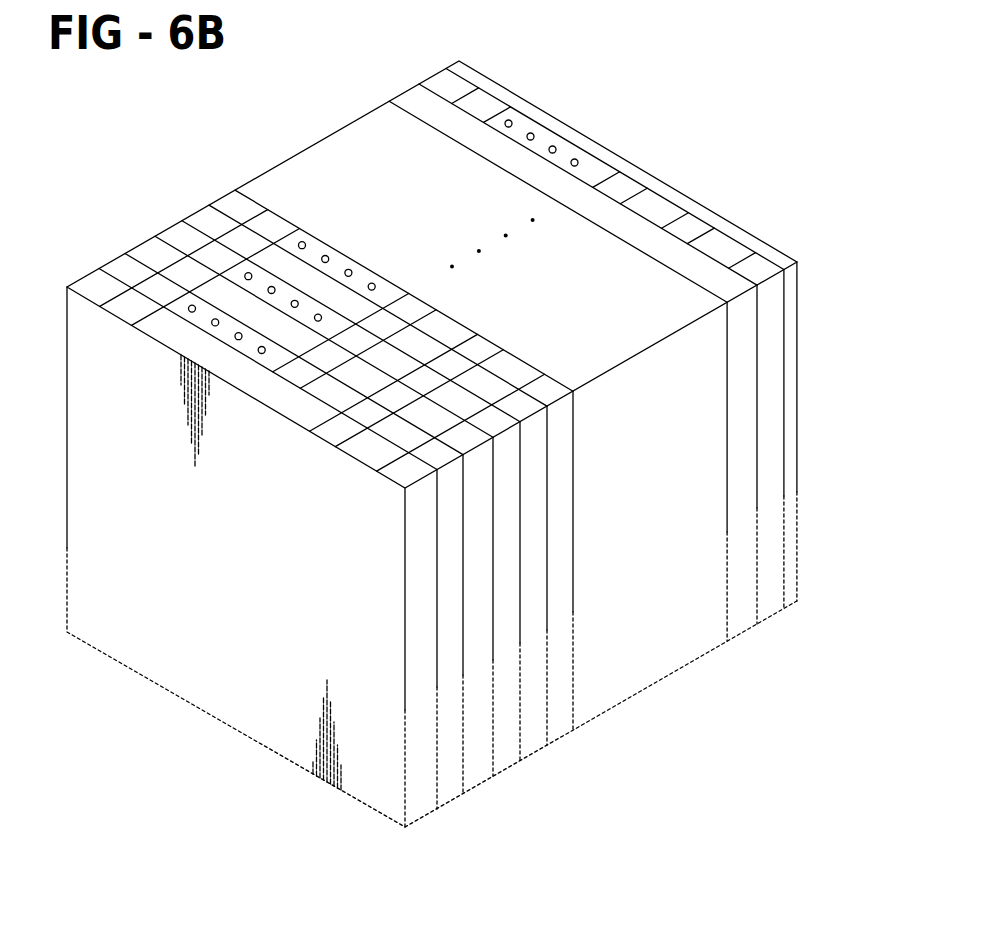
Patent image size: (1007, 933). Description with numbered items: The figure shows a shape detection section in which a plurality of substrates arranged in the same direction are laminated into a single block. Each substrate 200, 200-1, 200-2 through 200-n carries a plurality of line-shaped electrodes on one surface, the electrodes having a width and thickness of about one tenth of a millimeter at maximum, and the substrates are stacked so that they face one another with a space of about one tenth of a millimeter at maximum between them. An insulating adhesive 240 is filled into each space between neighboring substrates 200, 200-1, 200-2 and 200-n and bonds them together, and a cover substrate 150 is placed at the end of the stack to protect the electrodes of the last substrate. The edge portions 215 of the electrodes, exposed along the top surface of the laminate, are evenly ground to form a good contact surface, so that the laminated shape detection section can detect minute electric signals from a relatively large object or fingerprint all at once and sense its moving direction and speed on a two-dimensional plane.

The cover substrate 150 is at (795, 343).
The substrate 200 is at (418, 822).
The substrate 200-1 is at (478, 777).
The layer 200-2 is at (533, 747).
The nth layer 200-n is at (745, 632).
The insulating adhesive 240 is at (448, 787).
The edge portions 215 is at (280, 228).